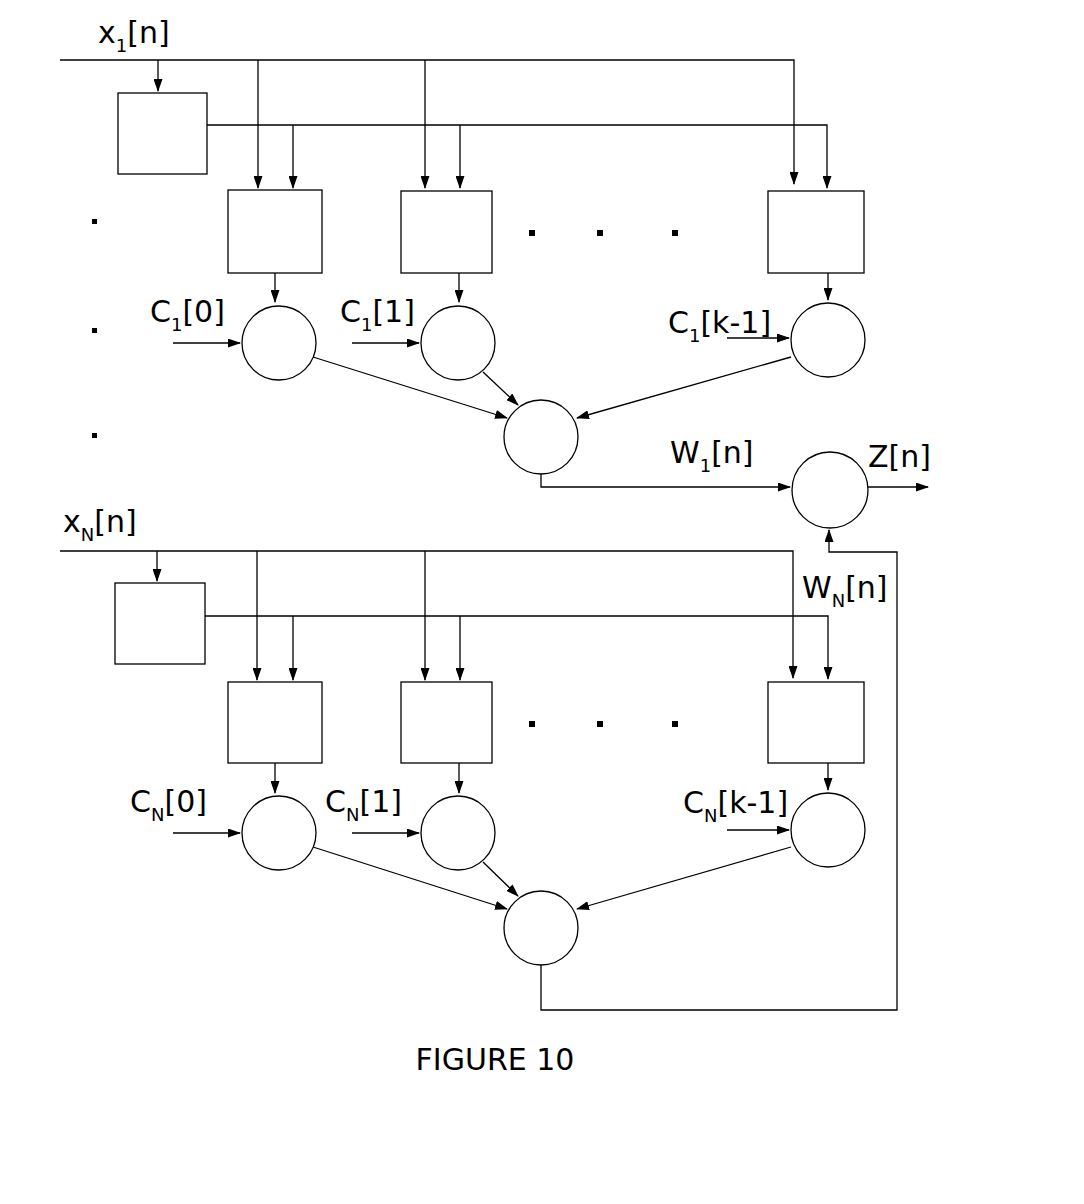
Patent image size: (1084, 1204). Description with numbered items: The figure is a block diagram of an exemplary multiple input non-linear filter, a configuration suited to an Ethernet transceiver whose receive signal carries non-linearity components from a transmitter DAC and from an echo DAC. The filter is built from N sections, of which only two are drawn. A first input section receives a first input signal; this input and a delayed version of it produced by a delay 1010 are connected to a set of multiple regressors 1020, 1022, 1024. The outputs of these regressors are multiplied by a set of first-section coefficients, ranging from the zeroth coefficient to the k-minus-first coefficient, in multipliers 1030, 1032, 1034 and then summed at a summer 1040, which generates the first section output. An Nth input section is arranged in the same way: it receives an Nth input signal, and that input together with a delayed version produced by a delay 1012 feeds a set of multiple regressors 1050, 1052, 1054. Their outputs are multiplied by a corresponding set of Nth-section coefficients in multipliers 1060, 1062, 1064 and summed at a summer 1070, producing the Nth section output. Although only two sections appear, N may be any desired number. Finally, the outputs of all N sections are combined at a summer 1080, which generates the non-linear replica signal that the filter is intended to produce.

The delay 1010 is at (158, 176).
The delay 1012 is at (160, 667).
The regressor 1020 is at (302, 262).
The regressor 1022 is at (472, 262).
The regressor 1024 is at (842, 262).
The multiplier 1030 is at (277, 363).
The multiplier 1032 is at (500, 335).
The multiplier 1034 is at (810, 367).
The summer 1040 is at (506, 457).
The regressor 1050 is at (302, 752).
The regressor 1052 is at (472, 752).
The regressor 1054 is at (842, 752).
The multiplier 1060 is at (272, 858).
The multiplier 1062 is at (497, 829).
The multiplier 1064 is at (828, 860).
The summer 1070 is at (506, 948).
The summer 1080 is at (795, 501).